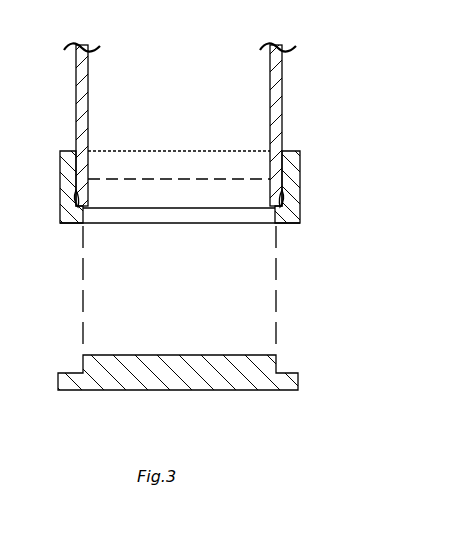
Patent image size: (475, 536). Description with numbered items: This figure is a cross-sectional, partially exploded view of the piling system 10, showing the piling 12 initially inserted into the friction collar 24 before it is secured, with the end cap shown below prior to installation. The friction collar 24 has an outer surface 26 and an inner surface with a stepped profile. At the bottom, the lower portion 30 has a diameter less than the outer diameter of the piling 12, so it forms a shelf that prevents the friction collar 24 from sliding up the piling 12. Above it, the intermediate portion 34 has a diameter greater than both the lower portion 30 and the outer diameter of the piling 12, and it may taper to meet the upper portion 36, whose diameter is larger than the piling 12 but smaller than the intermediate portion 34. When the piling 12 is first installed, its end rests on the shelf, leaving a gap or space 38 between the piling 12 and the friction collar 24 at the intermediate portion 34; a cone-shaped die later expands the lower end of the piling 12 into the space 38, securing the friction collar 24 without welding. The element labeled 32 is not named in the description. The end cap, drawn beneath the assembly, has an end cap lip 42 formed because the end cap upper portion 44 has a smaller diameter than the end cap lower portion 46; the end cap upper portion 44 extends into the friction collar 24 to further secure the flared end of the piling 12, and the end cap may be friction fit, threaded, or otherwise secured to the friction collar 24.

The piling system 10 is at (305, 365).
The piling 12 is at (283, 128).
The friction collar 24 is at (318, 173).
The outer surface 26 is at (300, 198).
The lower portion 30 is at (194, 229).
The right weld 32 is at (280, 212).
The intermediate portion 34 is at (74, 200).
The upper portion 36 is at (86, 164).
The gap or space 38 is at (80, 197).
The end cap lip 42 is at (287, 372).
The end cap upper portion 44 is at (207, 354).
The end cap lower portion 46 is at (299, 381).